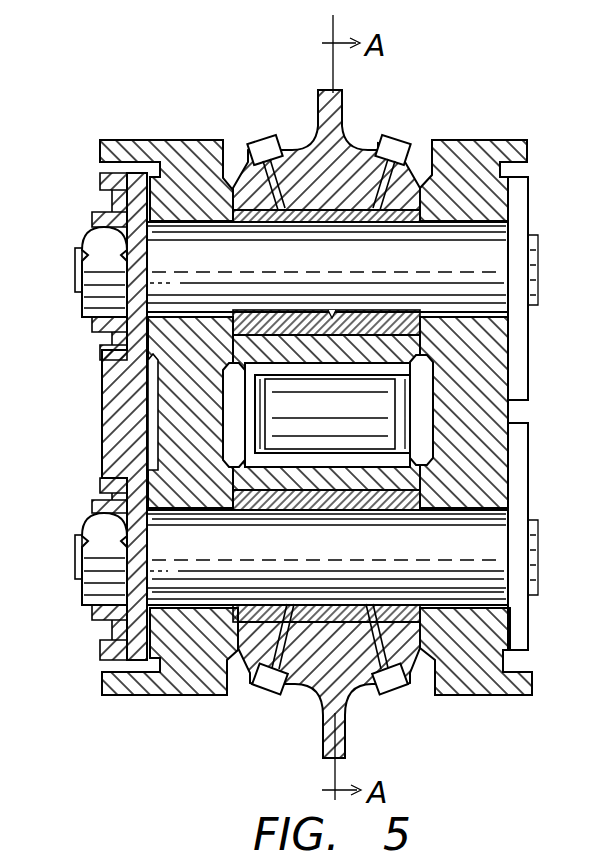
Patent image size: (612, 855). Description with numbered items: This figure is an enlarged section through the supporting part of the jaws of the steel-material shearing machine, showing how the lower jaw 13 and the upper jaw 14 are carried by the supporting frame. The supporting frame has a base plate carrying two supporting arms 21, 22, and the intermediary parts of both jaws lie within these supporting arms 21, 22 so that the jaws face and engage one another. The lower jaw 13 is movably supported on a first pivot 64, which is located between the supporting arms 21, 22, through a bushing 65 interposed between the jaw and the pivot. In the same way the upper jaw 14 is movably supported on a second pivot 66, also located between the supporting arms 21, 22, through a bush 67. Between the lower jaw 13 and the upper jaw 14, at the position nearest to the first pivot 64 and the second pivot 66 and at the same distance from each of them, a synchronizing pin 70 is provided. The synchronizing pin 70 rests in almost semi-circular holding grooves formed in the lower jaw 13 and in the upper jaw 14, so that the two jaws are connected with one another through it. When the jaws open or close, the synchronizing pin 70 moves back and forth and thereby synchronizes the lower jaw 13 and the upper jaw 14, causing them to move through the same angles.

The lower jaw 13 is at (320, 682).
The upper jaw 14 is at (310, 158).
The supporting arm 21 is at (470, 155).
The supporting arm 22 is at (174, 150).
The first pivot 64 is at (160, 557).
The bushing 65 is at (306, 508).
The second pivot 66 is at (158, 268).
The bush 67 is at (372, 310).
The synchronizing pin 70 is at (370, 414).